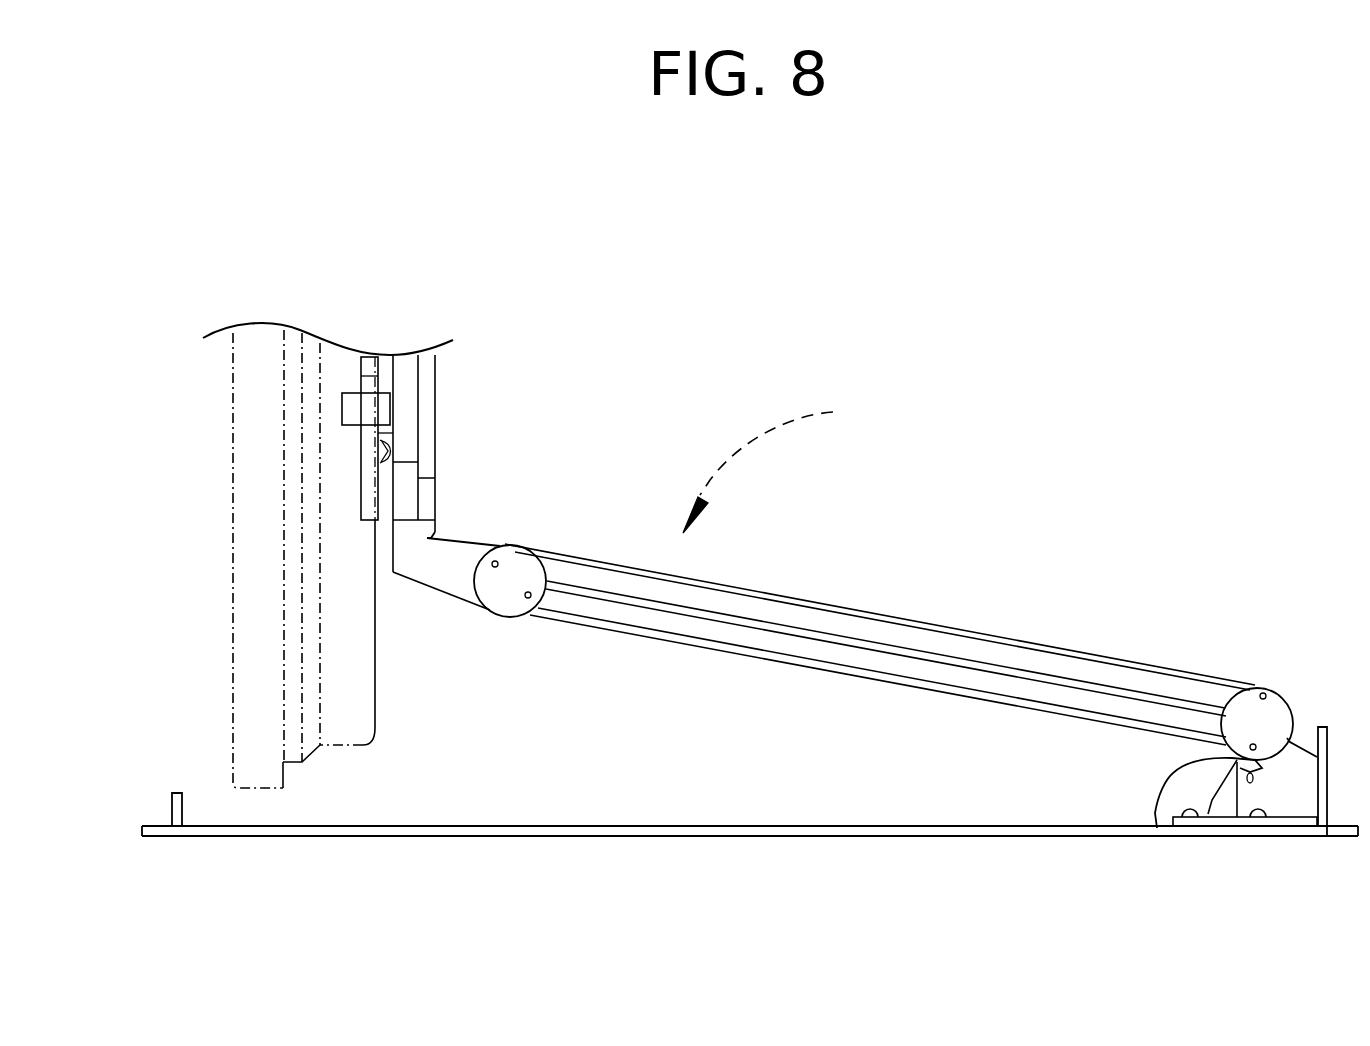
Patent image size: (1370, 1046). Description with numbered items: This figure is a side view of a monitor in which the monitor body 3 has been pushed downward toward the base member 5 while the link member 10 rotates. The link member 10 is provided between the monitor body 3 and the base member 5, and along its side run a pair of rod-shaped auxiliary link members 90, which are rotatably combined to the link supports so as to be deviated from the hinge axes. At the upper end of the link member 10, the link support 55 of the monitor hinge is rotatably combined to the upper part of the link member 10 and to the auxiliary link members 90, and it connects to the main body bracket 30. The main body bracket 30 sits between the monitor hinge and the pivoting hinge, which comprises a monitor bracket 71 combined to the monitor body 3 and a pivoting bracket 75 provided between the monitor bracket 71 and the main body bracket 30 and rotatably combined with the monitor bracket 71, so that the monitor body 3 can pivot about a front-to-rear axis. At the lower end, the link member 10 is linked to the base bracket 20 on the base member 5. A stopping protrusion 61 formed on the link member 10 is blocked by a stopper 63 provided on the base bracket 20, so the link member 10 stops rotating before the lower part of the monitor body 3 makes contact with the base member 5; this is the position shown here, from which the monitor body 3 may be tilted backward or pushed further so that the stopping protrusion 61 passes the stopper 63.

The monitor body 3 is at (248, 627).
The base member 5 is at (768, 840).
The link member 10 is at (1050, 647).
The base bracket 20 is at (1298, 790).
The main body bracket 30 is at (445, 560).
The link support 55 is at (517, 568).
The stopping protrusion 61 is at (1157, 828).
The stopper 63 is at (1237, 775).
The monitor bracket 71 is at (366, 365).
The pivoting bracket 75 is at (425, 388).
The auxiliary link member 90 is at (866, 657).